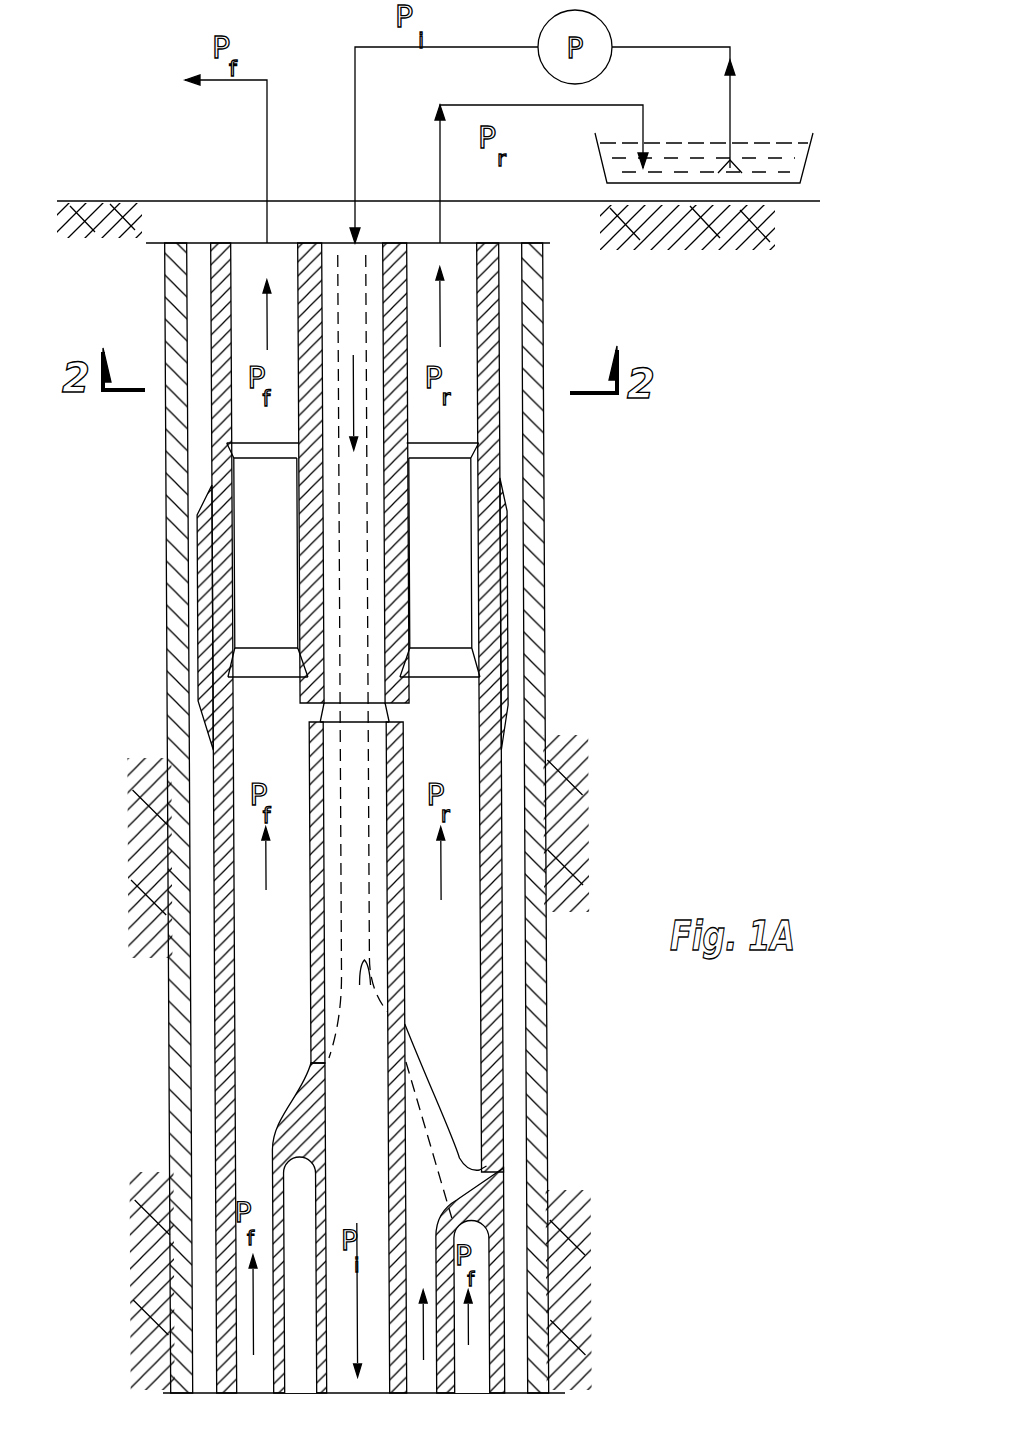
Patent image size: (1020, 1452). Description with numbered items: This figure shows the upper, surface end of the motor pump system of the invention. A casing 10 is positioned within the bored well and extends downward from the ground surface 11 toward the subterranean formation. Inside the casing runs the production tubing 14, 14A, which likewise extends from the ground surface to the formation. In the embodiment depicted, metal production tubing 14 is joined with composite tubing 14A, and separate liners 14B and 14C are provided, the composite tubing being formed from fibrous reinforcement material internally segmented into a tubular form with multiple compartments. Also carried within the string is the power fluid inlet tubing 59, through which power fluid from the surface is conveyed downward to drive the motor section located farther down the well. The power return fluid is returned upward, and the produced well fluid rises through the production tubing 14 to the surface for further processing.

The casing 10 is at (527, 1017).
The surface 11 is at (162, 200).
The production tubing 14 is at (489, 1103).
The composite tubing 14A is at (212, 560).
The liner 14B is at (472, 330).
The liner 14C is at (224, 326).
The power fluid inlet tubing 59 is at (306, 997).